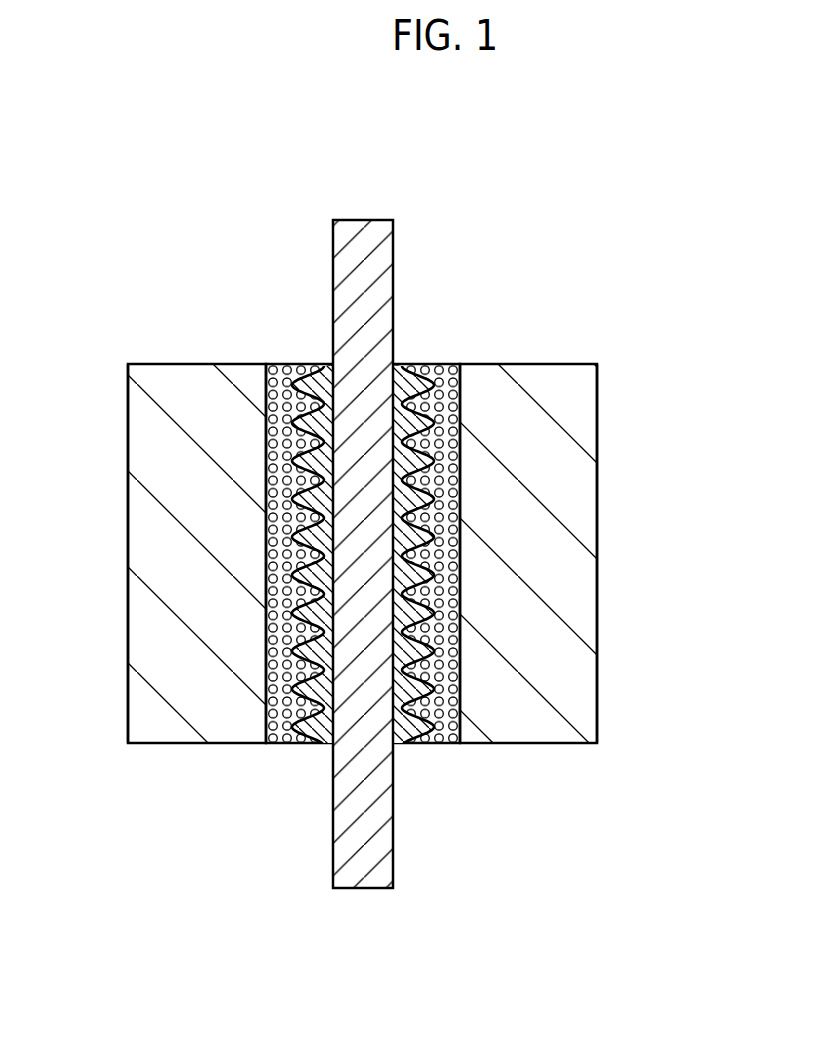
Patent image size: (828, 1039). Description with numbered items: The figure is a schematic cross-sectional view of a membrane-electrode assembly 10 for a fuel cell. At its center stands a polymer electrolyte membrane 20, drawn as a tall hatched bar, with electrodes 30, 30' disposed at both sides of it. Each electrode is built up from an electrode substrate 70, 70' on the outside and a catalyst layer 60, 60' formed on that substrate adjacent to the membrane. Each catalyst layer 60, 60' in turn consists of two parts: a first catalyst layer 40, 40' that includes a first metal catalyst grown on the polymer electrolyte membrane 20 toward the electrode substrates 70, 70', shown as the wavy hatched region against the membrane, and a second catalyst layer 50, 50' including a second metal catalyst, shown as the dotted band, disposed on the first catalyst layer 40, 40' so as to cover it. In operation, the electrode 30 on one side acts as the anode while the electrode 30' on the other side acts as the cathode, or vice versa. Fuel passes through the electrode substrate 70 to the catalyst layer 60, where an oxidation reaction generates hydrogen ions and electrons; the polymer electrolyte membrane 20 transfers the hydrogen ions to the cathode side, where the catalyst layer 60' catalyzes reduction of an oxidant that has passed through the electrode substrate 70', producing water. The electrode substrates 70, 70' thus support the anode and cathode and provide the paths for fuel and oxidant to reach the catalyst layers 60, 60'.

The membrane-electrode assembly 10 is at (500, 200).
The polymer electrolyte membrane 20 is at (360, 219).
The electrode 30 is at (159, 503).
The electrode 30' is at (570, 505).
The first catalyst layer 40 is at (309, 599).
The first catalyst layer 40' is at (413, 599).
The second catalyst layer 50 is at (287, 589).
The second catalyst layer 50' is at (435, 589).
The catalyst layer 60 is at (288, 614).
The catalyst layer 60' is at (437, 614).
The electrode substrate 70 is at (92, 553).
The electrode substrate 70' is at (629, 553).